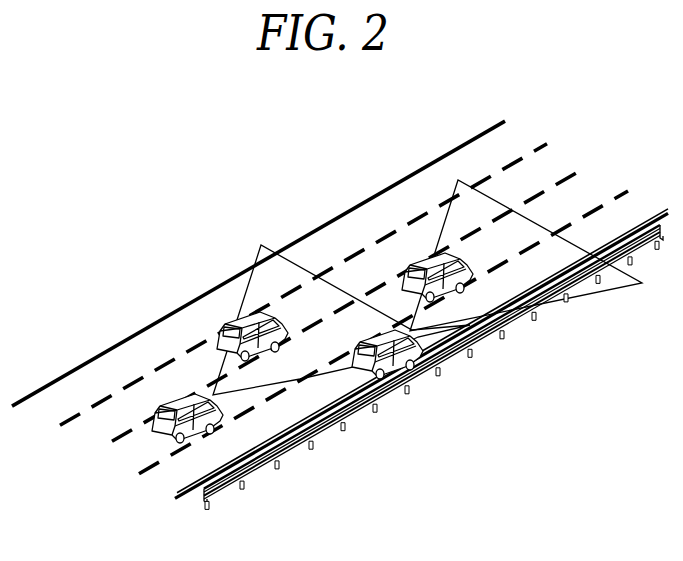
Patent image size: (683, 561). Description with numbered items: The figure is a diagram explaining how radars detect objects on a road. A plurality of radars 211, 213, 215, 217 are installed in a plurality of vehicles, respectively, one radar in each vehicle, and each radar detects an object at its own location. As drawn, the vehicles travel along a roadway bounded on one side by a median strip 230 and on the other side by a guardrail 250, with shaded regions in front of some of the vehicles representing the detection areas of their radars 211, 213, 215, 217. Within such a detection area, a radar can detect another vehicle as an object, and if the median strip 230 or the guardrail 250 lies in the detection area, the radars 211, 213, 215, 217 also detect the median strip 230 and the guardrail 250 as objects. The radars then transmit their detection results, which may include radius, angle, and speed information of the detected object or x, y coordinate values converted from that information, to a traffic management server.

The radar 211 is at (468, 257).
The radar 213 is at (418, 331).
The radar 215 is at (285, 318).
The radar 217 is at (222, 401).
The median strip 230 is at (184, 304).
The guardrail 250 is at (293, 457).